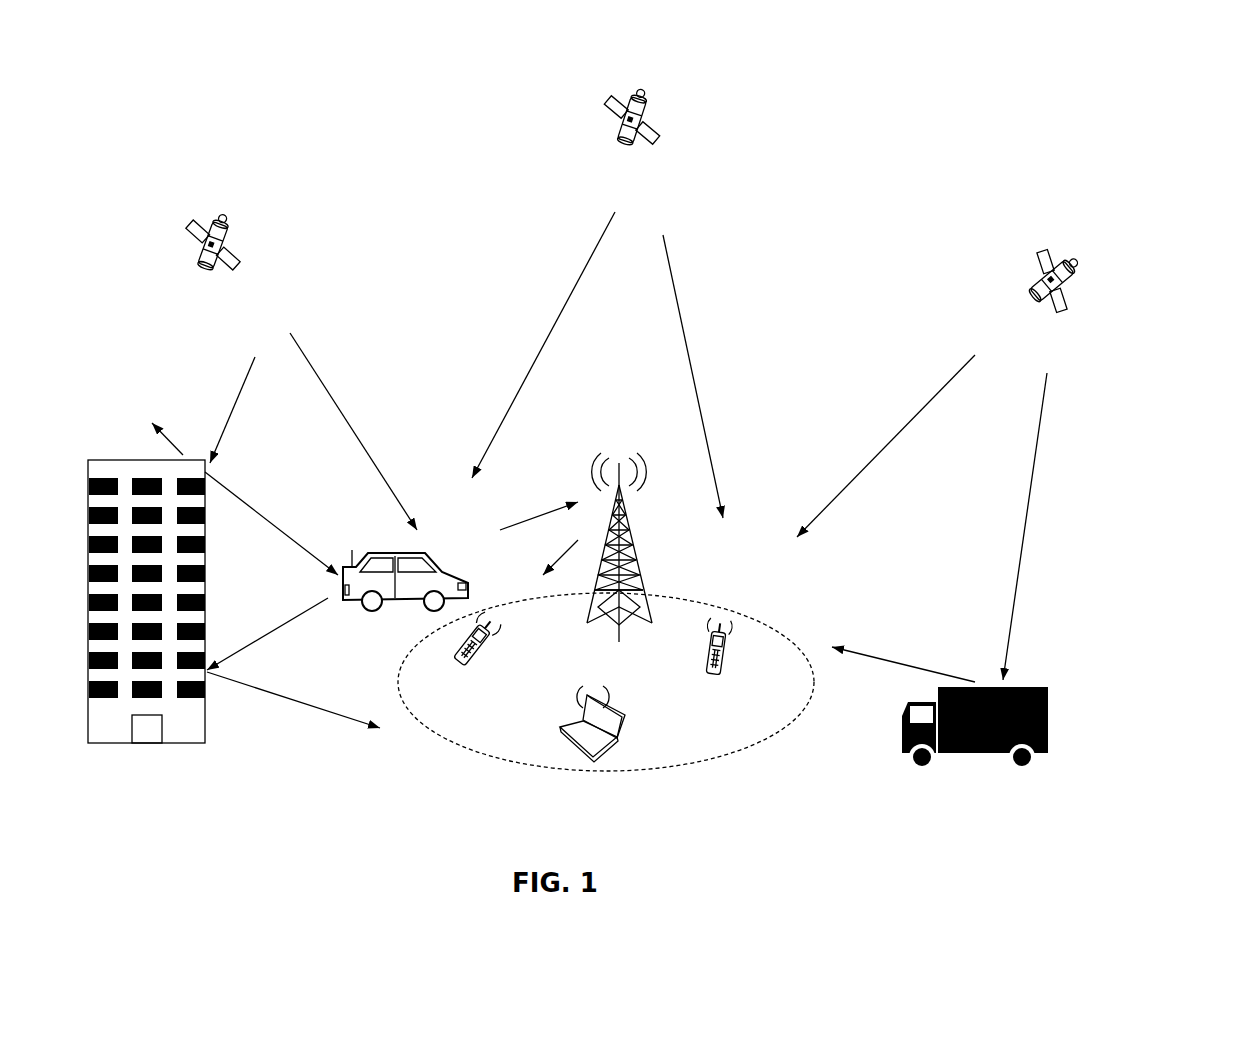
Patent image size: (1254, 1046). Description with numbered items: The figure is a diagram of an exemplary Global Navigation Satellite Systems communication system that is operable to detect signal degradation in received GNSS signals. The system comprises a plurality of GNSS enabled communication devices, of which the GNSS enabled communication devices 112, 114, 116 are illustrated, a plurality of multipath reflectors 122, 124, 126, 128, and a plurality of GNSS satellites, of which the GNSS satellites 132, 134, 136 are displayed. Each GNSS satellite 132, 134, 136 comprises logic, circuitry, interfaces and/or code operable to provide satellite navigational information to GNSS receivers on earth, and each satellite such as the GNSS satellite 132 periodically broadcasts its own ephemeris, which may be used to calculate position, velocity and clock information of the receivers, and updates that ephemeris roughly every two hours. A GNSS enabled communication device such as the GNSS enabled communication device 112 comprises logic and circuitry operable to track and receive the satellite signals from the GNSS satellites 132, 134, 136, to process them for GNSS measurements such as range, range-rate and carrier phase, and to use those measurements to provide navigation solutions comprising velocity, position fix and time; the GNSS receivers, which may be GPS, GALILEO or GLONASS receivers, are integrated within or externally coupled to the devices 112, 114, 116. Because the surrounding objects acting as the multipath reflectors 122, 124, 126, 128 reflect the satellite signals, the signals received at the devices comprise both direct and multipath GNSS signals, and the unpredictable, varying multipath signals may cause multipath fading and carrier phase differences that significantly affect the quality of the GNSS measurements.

The GNSS enabled communication device 112 is at (622, 721).
The GNSS enabled communication device 114 is at (488, 652).
The GNSS enabled communication device 116 is at (730, 656).
The multipath reflector 122 is at (106, 455).
The multipath reflector 124 is at (646, 546).
The multipath reflector 126 is at (452, 544).
The multipath reflector 128 is at (1060, 698).
The GNSS satellite 132 is at (682, 166).
The GNSS satellite 134 is at (262, 275).
The GNSS satellite 136 is at (1103, 326).